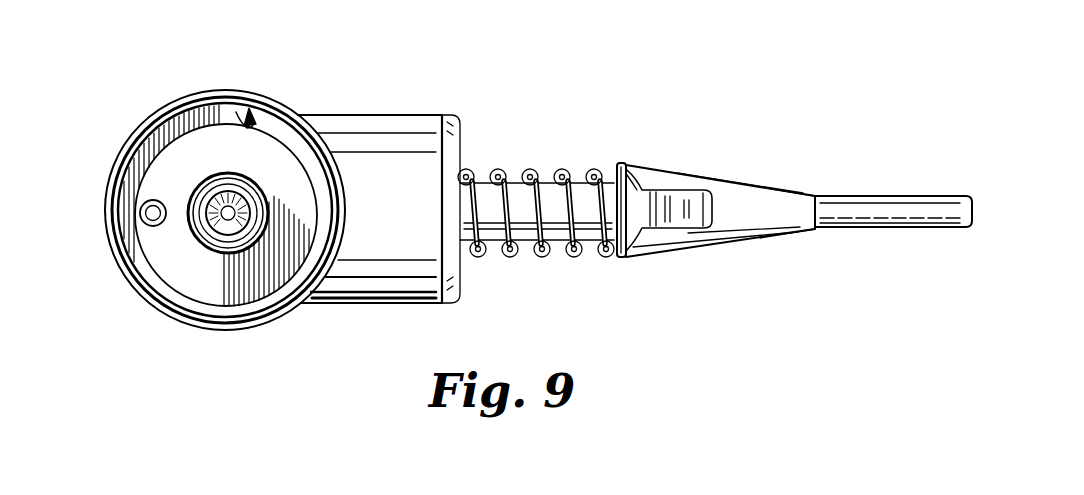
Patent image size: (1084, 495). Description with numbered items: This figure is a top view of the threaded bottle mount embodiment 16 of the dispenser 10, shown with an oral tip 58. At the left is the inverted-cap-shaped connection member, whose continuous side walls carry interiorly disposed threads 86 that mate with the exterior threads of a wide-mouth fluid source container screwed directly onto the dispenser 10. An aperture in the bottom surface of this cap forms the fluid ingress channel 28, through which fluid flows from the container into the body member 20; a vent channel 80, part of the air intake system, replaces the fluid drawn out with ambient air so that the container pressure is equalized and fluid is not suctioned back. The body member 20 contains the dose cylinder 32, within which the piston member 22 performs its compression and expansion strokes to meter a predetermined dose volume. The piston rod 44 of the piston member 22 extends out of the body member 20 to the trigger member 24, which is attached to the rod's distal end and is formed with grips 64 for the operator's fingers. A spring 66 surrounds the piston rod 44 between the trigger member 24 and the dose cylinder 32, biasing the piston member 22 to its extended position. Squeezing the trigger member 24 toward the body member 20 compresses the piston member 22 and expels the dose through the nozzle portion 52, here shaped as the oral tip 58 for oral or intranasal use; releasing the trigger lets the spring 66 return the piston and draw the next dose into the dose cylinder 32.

The dispenser 10 is at (614, 93).
The Threaded Bottle Mount embodiment 16 is at (693, 112).
The body member 20 is at (334, 94).
The piston member 22 is at (590, 295).
The trigger member 24 is at (722, 300).
The fluid ingress channel 28 is at (163, 204).
The dose cylinder 32 is at (342, 304).
The piston rod 44 is at (509, 182).
The nozzle portion 52 is at (801, 295).
The oral tip 58 is at (897, 194).
The grips 64 is at (669, 240).
The spring 66 is at (560, 183).
The vent channel 80 is at (206, 235).
The interiorly disposed threads 86 is at (243, 126).